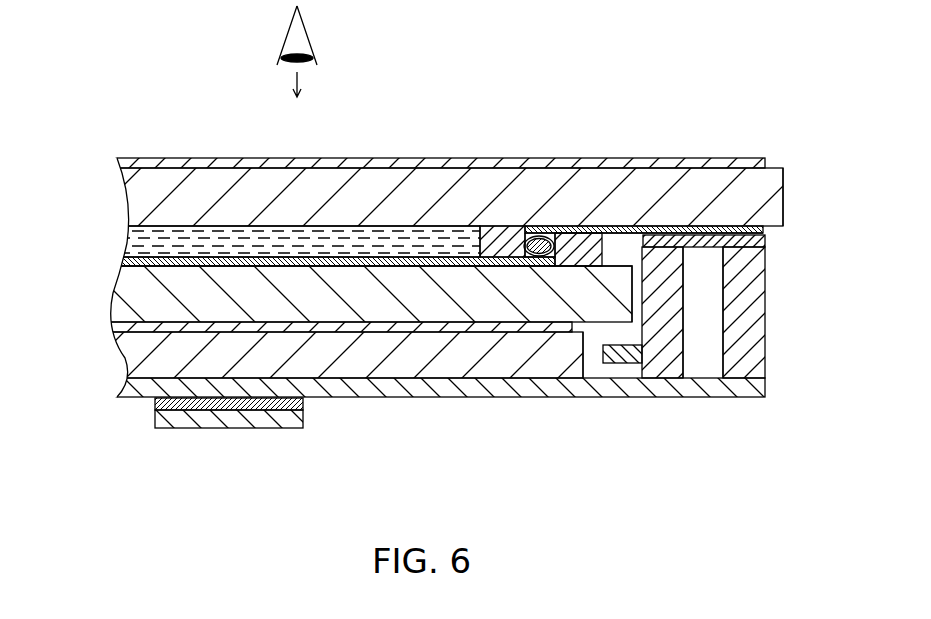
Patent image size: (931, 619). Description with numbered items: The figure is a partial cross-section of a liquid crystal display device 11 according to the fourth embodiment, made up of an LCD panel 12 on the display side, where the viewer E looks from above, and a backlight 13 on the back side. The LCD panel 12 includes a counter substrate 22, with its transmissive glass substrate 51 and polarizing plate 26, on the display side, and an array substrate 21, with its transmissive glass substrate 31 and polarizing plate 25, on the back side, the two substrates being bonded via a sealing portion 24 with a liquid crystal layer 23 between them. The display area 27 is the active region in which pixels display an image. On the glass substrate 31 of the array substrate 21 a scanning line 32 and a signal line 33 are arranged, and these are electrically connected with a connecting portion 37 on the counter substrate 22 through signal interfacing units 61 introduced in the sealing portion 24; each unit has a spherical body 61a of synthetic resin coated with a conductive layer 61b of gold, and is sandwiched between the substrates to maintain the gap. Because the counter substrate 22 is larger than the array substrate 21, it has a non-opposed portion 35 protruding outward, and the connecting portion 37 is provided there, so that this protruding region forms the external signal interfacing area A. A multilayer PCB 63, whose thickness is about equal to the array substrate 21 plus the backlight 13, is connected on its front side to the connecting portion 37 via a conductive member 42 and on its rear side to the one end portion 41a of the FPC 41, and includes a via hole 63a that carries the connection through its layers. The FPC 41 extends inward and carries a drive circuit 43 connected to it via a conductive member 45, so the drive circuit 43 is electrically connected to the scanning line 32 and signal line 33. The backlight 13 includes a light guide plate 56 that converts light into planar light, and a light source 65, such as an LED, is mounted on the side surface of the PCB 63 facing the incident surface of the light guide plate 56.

The liquid crystal display device 11 is at (648, 92).
The LCD panel 12 is at (100, 160).
The backlight 13 is at (100, 335).
The array substrate 21 is at (358, 312).
The counter substrate 22 is at (497, 183).
The liquid crystal layer 23 is at (227, 245).
The sealing portion 24 is at (565, 258).
The polarizing plate 25 is at (449, 328).
The polarizing plate 26 is at (627, 164).
The display area 27 is at (480, 122).
The glass substrate 31 is at (397, 312).
The scanning line 32 is at (414, 257).
The signal line 33 is at (414, 257).
The non-opposed portion 35 is at (700, 228).
The connecting portion 37 is at (723, 228).
The FPC 41 is at (507, 385).
The one end portion 41a is at (668, 385).
The conductive member 42 is at (757, 241).
The drive circuit 43 is at (220, 425).
The conductive member 45 is at (272, 407).
The glass substrate 51 is at (663, 183).
The light guide plate 56 is at (483, 365).
The signal interfacing unit 61 is at (518, 123).
The spherical body 61a is at (560, 242).
The conductive layer 61b is at (537, 231).
The PCB 63 is at (752, 378).
The via hole 63a is at (722, 357).
The light source 65 is at (603, 360).
The eye of viewer E is at (310, 32).
The external signal interfacing area A is at (642, 440).